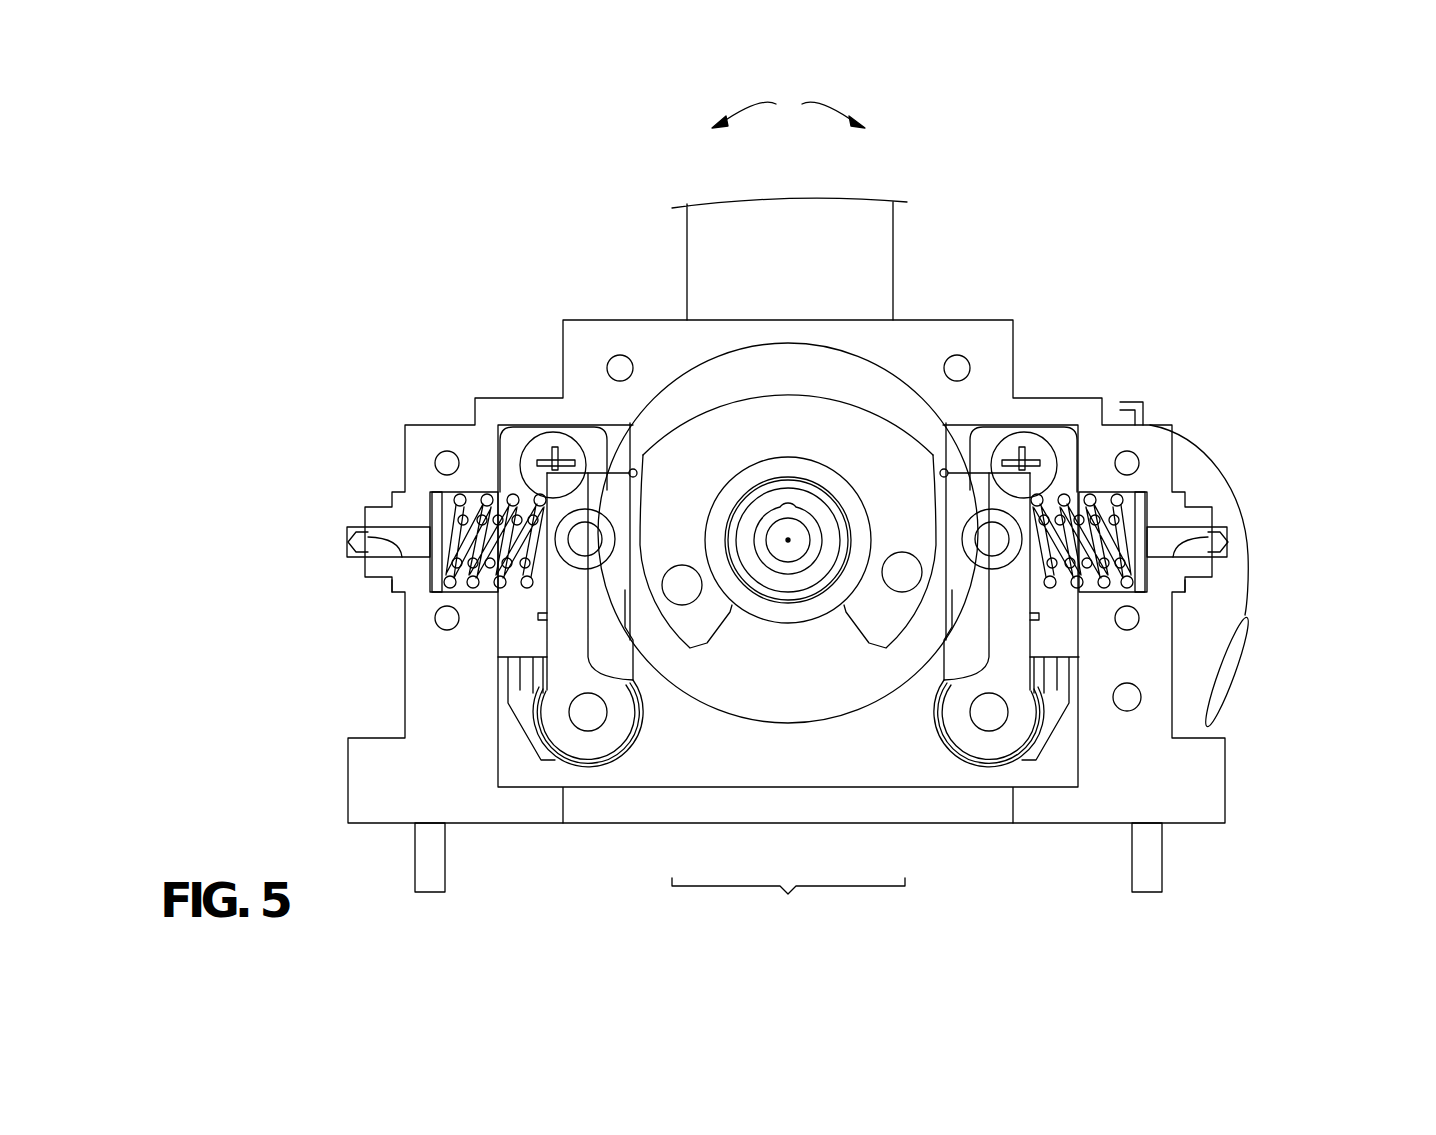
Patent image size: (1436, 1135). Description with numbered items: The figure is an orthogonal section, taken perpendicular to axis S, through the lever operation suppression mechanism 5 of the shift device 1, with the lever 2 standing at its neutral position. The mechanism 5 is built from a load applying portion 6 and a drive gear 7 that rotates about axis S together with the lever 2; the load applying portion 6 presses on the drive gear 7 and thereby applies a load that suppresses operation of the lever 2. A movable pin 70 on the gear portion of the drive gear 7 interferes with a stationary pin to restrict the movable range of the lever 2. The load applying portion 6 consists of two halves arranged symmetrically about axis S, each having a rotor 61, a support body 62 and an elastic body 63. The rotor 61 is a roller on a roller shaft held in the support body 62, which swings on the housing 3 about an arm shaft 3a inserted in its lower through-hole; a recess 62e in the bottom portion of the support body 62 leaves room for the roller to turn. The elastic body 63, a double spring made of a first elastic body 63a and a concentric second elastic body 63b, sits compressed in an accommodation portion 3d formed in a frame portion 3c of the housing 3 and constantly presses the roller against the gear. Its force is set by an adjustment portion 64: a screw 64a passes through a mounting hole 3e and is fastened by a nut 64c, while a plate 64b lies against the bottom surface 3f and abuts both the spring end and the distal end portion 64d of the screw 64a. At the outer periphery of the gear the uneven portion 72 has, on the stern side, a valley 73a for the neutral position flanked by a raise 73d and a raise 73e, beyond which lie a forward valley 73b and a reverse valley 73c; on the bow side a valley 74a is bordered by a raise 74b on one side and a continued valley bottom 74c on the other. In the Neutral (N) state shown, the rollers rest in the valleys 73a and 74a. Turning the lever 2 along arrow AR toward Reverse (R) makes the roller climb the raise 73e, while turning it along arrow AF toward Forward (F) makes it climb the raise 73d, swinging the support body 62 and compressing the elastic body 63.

The drive device 1 is at (1046, 232).
The lever 2 is at (687, 258).
The housing 3 is at (940, 320).
The arm shaft 3a is at (590, 718).
The frame portion 3c is at (405, 688).
The accommodation portion 3d is at (462, 455).
The mounting hole 3e is at (347, 540).
The bottom surface 3f is at (430, 598).
The lever operation suppression mechanism 5 is at (788, 905).
The load applying portion 6 is at (628, 657).
The drive gear 7 is at (788, 725).
The rotor 61 is at (584, 510).
The support body 62 is at (650, 736).
The recess 62e is at (600, 549).
The elastic body 63 is at (420, 342).
The first elastic body 63a is at (472, 485).
The second elastic body 63b is at (460, 500).
The adjustment portion 64 is at (268, 545).
The screw 64a is at (430, 578).
The plate 64b is at (545, 565).
The nut 64c is at (392, 512).
The distal end portion 64d is at (425, 510).
The movable pin 70 is at (722, 655).
The uneven portion 72 is at (588, 556).
The valley 73a is at (608, 527).
The valley 73b is at (540, 668).
The valley 73c is at (637, 473).
The raise 73d is at (540, 617).
The raise 73e is at (590, 440).
The valley 74a is at (975, 530).
The raise 74b is at (1040, 633).
The valley bottom 74c is at (966, 460).
The axis S is at (788, 545).
The Neutral N is at (789, 102).
The Reverse R is at (732, 127).
The Forward F is at (844, 127).
The arrow AR is at (750, 105).
The arrow AF is at (830, 105).